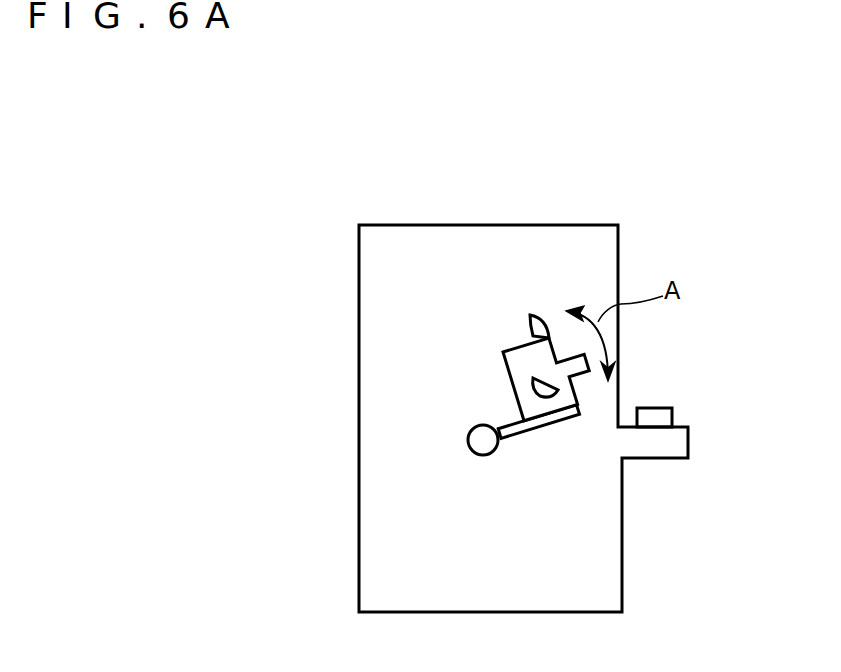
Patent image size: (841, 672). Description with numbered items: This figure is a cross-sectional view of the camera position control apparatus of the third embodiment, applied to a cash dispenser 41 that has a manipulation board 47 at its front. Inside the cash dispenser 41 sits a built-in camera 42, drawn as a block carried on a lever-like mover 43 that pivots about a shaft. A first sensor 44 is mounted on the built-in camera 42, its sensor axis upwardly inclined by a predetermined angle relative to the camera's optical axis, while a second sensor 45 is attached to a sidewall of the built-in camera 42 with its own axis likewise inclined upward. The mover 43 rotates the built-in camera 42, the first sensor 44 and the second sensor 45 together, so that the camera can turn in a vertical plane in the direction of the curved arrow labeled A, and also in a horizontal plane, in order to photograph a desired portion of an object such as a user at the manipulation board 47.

The cash dispenser 41 is at (580, 225).
The built-in camera 42 is at (515, 364).
The mover 43 is at (468, 441).
The first sensor 44 is at (529, 321).
The second sensor 45 is at (533, 388).
The manipulation board 47 is at (650, 408).